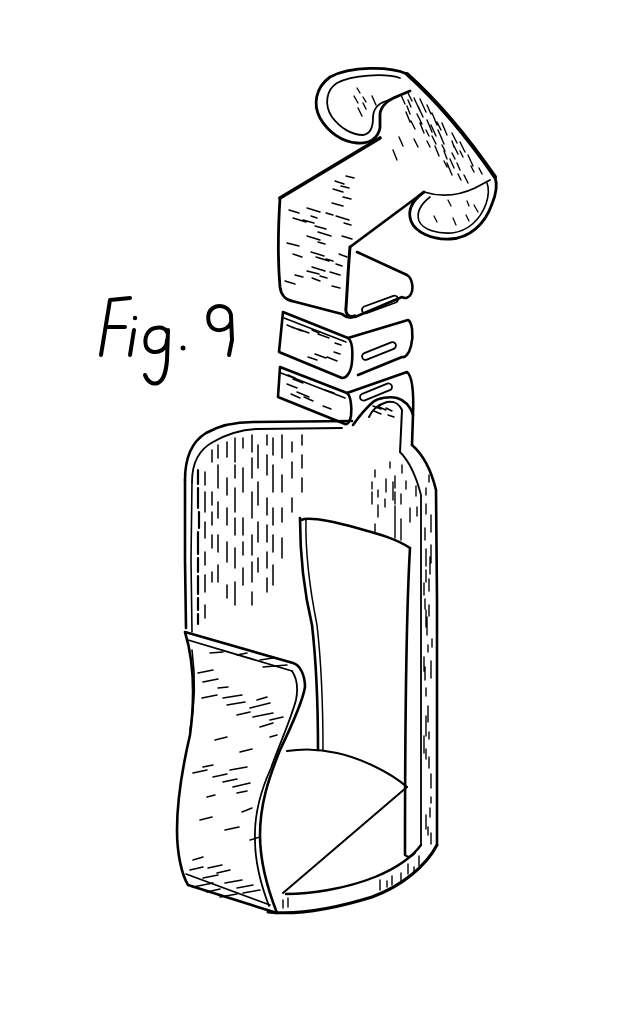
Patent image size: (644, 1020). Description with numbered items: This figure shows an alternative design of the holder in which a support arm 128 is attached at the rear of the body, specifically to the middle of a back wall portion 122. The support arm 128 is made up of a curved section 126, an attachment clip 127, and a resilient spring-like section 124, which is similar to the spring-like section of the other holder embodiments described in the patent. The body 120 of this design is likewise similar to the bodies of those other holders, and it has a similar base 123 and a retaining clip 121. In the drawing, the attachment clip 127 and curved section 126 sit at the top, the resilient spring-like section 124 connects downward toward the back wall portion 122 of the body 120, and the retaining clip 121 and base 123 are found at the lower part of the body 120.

The body 120 is at (453, 641).
The retaining clip 121 is at (180, 762).
The back wall portion 122 is at (437, 487).
The base 123 is at (407, 889).
The resilient spring-like section 124 is at (420, 263).
The curved section 126 is at (288, 202).
The attachment clip 127 is at (450, 130).
The support arm 128 is at (492, 277).